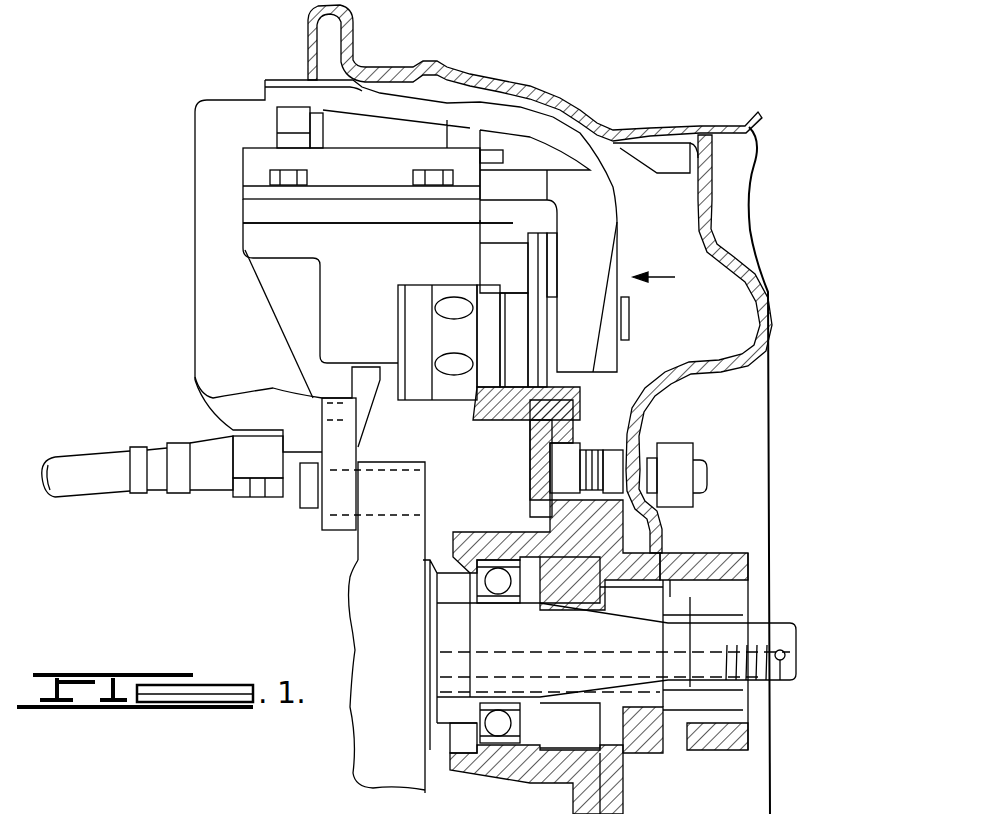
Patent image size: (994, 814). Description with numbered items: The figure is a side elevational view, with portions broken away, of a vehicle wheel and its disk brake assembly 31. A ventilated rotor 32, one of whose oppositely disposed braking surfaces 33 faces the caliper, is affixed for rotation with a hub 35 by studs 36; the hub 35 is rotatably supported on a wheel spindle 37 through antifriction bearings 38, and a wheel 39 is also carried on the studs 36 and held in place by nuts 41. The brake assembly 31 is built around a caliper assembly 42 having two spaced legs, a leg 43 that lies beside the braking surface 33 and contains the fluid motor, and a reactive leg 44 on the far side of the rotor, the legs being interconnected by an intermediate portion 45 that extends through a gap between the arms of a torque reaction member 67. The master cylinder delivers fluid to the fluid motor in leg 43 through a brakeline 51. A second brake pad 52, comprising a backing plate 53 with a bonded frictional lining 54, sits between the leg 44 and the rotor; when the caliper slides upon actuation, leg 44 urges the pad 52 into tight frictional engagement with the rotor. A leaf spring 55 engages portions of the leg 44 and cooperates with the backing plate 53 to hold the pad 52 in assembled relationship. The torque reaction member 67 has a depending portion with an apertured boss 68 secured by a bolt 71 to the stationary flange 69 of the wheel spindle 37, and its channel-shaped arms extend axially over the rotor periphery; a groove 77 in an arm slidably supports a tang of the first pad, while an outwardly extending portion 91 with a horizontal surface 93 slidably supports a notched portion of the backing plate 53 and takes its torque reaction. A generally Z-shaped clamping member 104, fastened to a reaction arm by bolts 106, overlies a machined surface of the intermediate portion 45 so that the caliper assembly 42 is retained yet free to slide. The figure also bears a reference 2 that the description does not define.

The disk brake assembly 31 is at (170, 160).
The caliper assembly 42 is at (191, 293).
The caliper leg 43 is at (208, 217).
The clamping member 104 is at (243, 188).
The bolts 106 is at (413, 175).
The intermediate portion 45 is at (390, 117).
The horizontal surface 93 is at (520, 227).
The groove 77 is at (413, 230).
The outwardly extending portion 91 is at (497, 270).
The caliper leg 44 is at (610, 223).
The braking surface 33 is at (398, 312).
The rotor 32 is at (397, 373).
The second brake pad 52 is at (553, 282).
The frictional lining 54 is at (505, 318).
The backing plate 53 is at (535, 343).
The leaf spring 55 is at (631, 338).
The direction arrow 2 is at (654, 299).
The wheel 39 is at (748, 268).
The brakeline 51 is at (88, 455).
The bolt 71 is at (297, 507).
The torque reaction member 67 is at (330, 535).
The apertured boss 68 is at (363, 456).
The flange 69 is at (425, 460).
The antifriction bearings 38 is at (487, 535).
The hub 35 is at (677, 553).
The wheel spindle 37 is at (773, 623).
The studs 36 is at (637, 463).
The nuts 41 is at (683, 463).